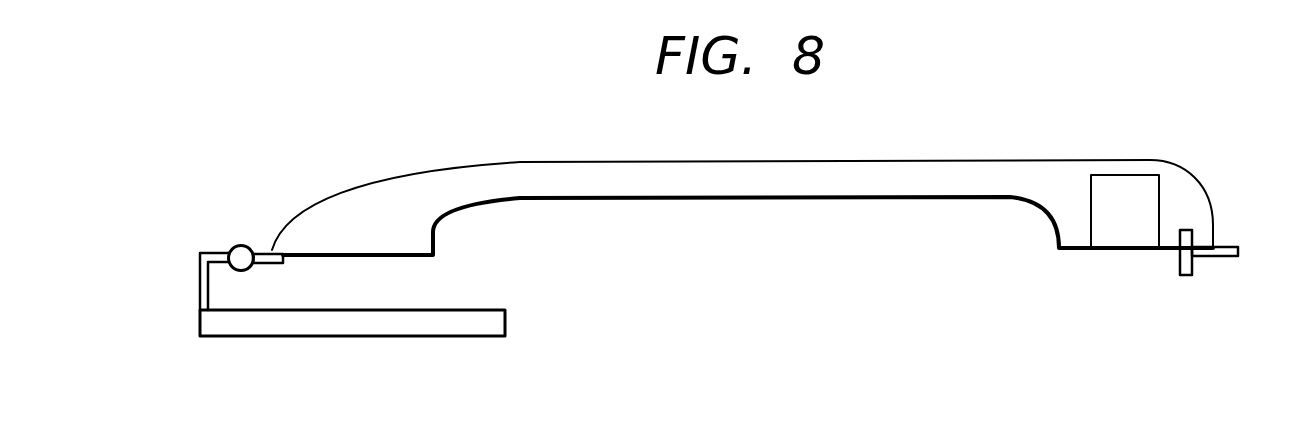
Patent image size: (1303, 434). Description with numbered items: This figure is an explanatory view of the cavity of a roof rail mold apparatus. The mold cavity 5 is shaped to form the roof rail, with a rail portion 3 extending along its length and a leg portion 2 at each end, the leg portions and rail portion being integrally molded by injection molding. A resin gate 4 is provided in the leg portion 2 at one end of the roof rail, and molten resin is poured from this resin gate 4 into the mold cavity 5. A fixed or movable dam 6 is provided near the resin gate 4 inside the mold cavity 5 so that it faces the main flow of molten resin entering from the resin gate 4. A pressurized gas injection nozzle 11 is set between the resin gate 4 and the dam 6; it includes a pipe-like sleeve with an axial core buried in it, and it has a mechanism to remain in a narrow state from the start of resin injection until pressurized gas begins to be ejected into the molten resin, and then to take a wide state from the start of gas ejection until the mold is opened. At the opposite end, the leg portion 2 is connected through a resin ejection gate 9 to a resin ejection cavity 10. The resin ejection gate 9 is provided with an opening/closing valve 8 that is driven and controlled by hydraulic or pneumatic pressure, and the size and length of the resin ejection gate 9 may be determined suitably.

The leg portion 2 is at (382, 195).
The rail portion 3 is at (825, 172).
The resin gate 4 is at (1230, 242).
The mold cavity 5 is at (942, 180).
The fixed or movable dam 6 is at (1135, 195).
The opening/closing valve 8 is at (230, 247).
The resin ejection gate 9 is at (263, 250).
The resin ejection cavity 10 is at (490, 320).
The pressurized gas injection nozzle 11 is at (1193, 267).